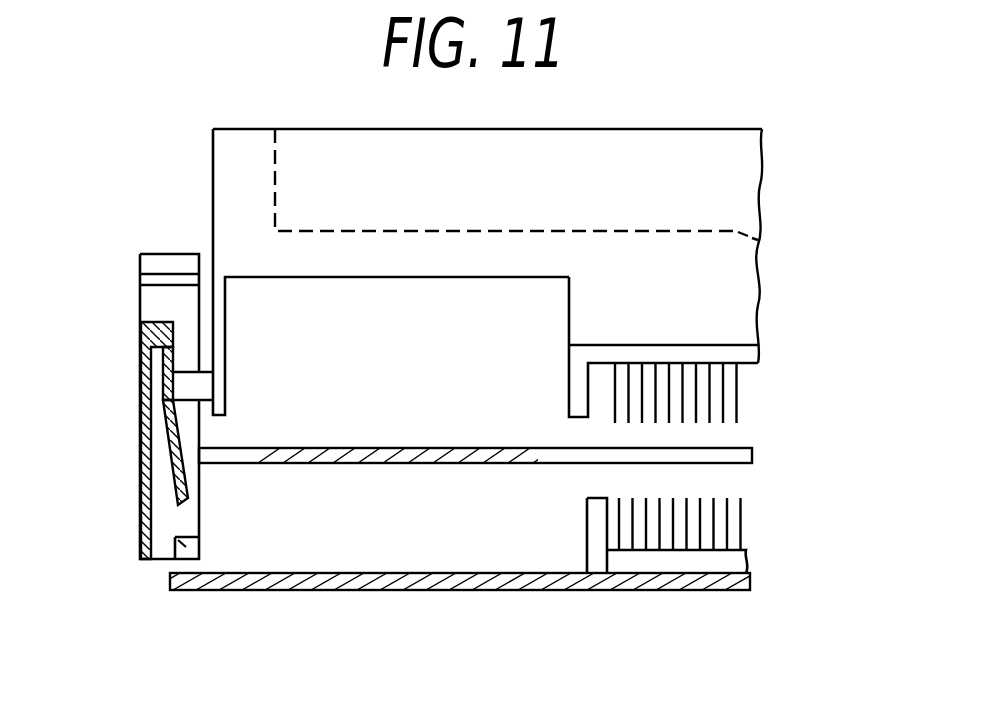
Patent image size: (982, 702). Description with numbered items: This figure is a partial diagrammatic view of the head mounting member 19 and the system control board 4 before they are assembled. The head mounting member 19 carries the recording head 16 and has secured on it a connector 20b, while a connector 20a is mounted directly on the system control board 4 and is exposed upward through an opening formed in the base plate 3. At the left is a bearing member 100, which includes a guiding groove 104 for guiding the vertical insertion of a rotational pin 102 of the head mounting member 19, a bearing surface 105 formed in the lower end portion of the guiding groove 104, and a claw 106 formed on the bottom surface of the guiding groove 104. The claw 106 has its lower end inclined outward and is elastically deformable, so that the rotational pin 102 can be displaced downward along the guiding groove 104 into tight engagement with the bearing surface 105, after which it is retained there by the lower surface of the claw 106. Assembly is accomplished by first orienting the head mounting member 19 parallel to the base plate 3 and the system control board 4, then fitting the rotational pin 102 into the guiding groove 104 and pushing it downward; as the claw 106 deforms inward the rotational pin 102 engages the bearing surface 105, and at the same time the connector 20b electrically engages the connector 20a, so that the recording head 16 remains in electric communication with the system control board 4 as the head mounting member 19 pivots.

The bearing member 100 is at (131, 540).
The rotational pin 102 is at (188, 384).
The guiding groove 104 is at (190, 421).
The bearing surface 105 is at (180, 542).
The claw 106 is at (177, 470).
The recording head 16 is at (737, 233).
The head mounting member 19 is at (745, 318).
The connector 20a is at (748, 517).
The connector 20b is at (745, 403).
The base plate 3 is at (755, 455).
The system control board 4 is at (733, 592).